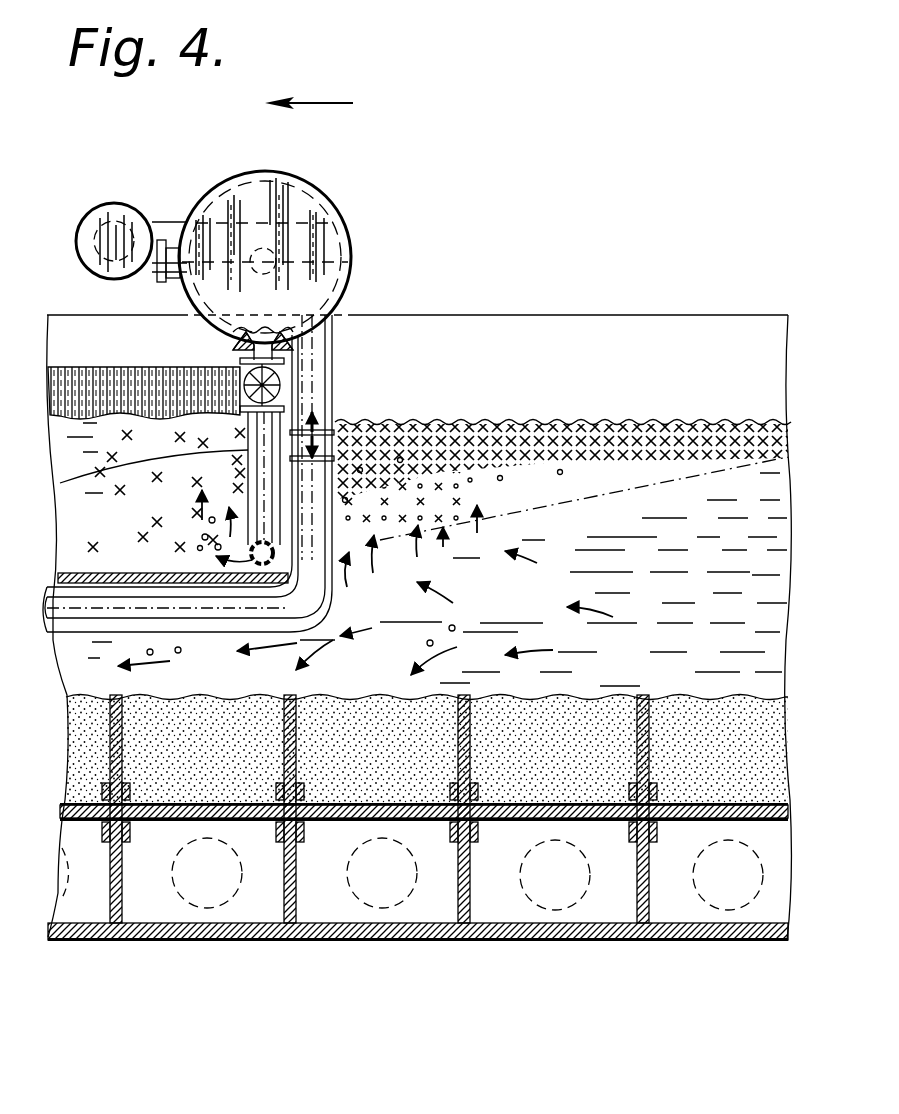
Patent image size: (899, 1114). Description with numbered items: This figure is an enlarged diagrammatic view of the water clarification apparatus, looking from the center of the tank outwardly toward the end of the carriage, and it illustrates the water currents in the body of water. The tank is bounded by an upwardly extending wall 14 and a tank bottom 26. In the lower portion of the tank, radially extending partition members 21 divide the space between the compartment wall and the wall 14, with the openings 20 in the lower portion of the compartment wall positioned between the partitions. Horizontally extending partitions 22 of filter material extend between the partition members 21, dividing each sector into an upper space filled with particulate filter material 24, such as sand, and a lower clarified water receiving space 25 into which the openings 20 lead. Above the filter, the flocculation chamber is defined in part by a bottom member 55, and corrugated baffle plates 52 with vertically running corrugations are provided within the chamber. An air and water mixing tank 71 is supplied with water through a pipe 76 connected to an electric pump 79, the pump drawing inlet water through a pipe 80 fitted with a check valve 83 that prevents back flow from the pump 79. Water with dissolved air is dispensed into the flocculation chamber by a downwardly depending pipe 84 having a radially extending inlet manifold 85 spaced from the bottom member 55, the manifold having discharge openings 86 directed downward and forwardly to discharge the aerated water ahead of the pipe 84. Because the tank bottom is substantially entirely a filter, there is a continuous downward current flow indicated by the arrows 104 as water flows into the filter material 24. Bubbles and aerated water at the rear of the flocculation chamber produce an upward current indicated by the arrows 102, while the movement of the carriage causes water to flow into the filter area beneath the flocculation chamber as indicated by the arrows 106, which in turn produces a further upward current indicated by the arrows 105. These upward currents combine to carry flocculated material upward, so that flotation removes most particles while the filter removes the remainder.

The upwardly extending wall 14 is at (597, 323).
The openings 20 is at (229, 900).
The partition members 21 is at (122, 752).
The horizontally extending partitions 22 is at (214, 805).
The particulate filter material 24 is at (210, 781).
The clarified water receiving spaces 25 is at (160, 912).
The tank bottom 26 is at (495, 941).
The corrugated baffle plates 52 is at (107, 367).
The bottom member 55 is at (82, 573).
The air and water mixing tank 71 is at (287, 208).
The pipe 76 is at (243, 346).
The electric pump 79 is at (121, 210).
The pipe 80 is at (335, 351).
The check valve 83 is at (334, 443).
The downwardly depending pipe 84 is at (66, 481).
The inlet manifold 85 is at (282, 561).
The discharge openings 86 is at (250, 556).
The arrows 102 is at (202, 500).
The arrows 104 is at (234, 706).
The arrows 105 is at (452, 582).
The arrows 106 is at (355, 632).